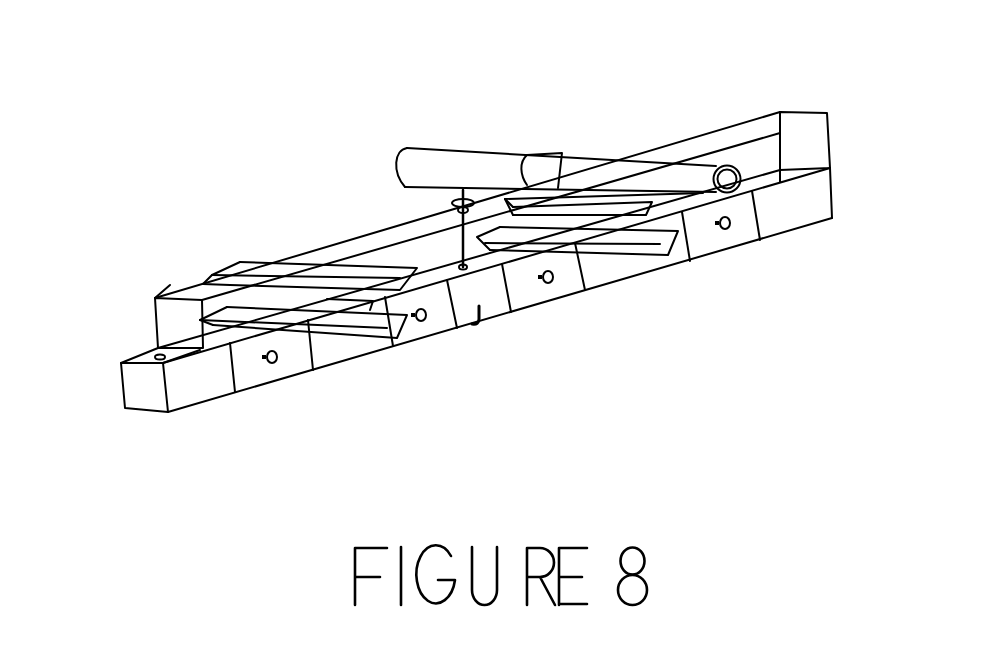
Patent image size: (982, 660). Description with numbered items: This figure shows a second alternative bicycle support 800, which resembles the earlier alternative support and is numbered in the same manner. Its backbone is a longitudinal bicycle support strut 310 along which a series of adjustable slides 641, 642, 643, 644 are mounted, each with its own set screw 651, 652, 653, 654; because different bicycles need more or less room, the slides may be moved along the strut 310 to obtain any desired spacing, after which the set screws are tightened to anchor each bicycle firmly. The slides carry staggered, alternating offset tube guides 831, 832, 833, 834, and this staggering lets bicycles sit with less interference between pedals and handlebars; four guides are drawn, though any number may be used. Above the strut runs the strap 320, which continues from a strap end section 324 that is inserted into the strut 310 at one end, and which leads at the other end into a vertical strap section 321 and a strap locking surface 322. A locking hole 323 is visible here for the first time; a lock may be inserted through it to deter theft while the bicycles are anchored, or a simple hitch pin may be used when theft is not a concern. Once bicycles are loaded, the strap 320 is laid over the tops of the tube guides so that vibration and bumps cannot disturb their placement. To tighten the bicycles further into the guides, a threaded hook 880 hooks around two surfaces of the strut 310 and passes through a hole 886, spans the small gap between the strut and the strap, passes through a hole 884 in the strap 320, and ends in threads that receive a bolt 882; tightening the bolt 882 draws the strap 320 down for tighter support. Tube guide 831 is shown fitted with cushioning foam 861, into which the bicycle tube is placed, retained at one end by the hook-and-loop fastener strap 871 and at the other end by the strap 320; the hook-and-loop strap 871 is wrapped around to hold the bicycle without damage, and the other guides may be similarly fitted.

The second alternative bicycle support 800 is at (222, 70).
The longitudinal bicycle support strut 310 is at (187, 395).
The strap 320 is at (200, 283).
The vertical strap section 321 is at (172, 313).
The strap locking surface 322 is at (118, 360).
The locking hole 323 is at (150, 352).
The strap end section 324 is at (800, 142).
The adjustable slide 641 is at (705, 245).
The adjustable slide 642 is at (562, 300).
The adjustable slide 643 is at (413, 330).
The adjustable slide 644 is at (243, 378).
The set screw 651 is at (733, 223).
The set screw 652 is at (555, 278).
The set screw 653 is at (428, 313).
The set screw 654 is at (287, 360).
The tube guide 831 is at (675, 195).
The tube guide 832 is at (690, 263).
The tube guide 833 is at (235, 262).
The tube guide 834 is at (405, 348).
The cushioning foam 861 is at (452, 160).
The Velcro brand hook and loop fastener strap 871 is at (545, 153).
The threaded hook 880 is at (458, 234).
The bolt 882 is at (455, 200).
The hole 884 is at (458, 210).
The hole 886 is at (532, 298).